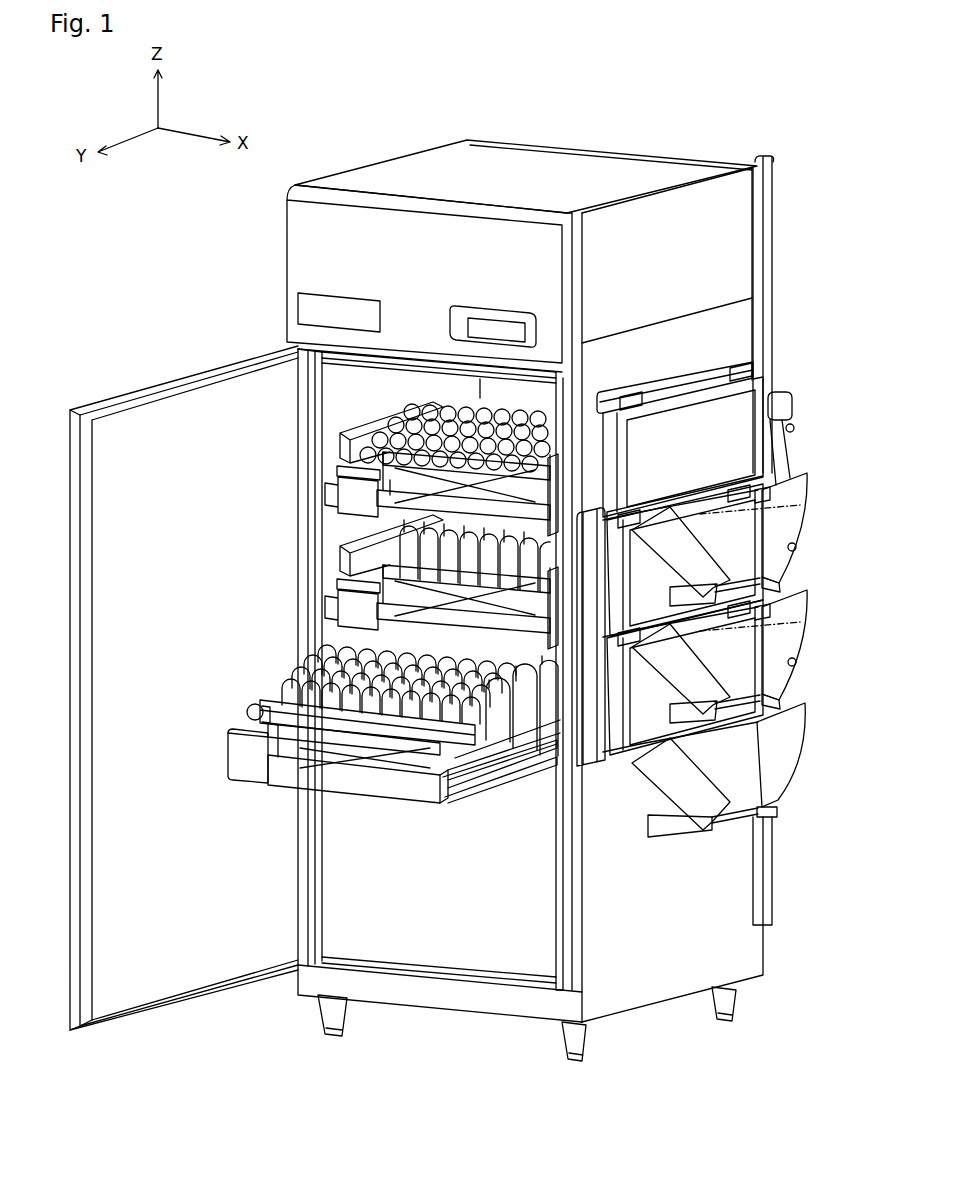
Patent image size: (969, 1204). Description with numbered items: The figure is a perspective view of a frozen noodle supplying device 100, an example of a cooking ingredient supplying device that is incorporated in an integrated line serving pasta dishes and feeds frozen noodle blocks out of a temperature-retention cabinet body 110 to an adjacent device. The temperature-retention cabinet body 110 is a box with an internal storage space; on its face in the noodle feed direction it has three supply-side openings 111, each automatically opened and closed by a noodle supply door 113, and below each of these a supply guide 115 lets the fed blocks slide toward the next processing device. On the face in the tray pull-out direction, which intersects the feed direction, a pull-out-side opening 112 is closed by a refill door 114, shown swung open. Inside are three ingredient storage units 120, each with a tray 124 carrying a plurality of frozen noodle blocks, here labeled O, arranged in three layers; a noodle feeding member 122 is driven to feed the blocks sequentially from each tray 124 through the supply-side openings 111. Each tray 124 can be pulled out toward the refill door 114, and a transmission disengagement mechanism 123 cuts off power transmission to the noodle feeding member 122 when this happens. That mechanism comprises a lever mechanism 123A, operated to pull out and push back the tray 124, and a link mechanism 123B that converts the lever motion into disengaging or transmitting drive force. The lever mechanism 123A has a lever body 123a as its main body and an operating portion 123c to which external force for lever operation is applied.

The frozen noodle supplying device 100 is at (436, 98).
The temperature-retention cabinet body 110 is at (654, 131).
The supply-side opening 111 is at (794, 409).
The pull-out-side opening 112 is at (335, 380).
The noodle supply door 113 is at (768, 380).
The refill door 114 is at (118, 393).
The supply guide 115 is at (795, 515).
The ingredient storage unit 120 is at (320, 456).
The noodle feeding member 122 is at (404, 415).
The transmission disengagement mechanism 123 is at (192, 566).
The lever mechanism 123A is at (330, 626).
The link mechanism 123B is at (330, 588).
The lever body 123a is at (283, 788).
The operating portion 123c is at (262, 742).
The tray 124 is at (562, 492).
The object (commodity) O is at (282, 686).